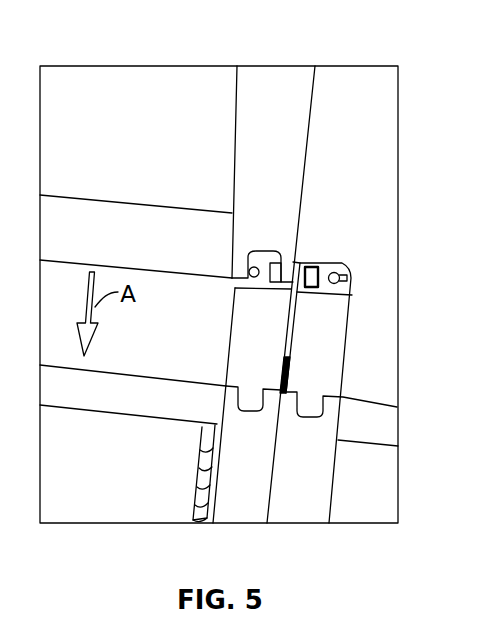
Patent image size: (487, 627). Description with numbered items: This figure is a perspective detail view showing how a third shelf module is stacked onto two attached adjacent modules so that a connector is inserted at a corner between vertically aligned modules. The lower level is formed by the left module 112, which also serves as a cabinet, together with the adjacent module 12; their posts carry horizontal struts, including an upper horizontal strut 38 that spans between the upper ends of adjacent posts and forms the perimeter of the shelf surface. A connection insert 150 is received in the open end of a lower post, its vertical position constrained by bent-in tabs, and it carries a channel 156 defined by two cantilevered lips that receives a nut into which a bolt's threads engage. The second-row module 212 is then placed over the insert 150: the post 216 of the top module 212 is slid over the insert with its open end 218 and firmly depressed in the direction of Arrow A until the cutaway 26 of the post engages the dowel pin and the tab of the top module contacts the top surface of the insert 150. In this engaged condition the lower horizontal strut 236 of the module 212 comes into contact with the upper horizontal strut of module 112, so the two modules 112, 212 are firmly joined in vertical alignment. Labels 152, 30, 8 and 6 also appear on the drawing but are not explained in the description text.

The module 212 is at (147, 98).
The post 216 is at (266, 98).
The open end 218 is at (228, 282).
The connector block 152 is at (311, 264).
The channel 156 is at (338, 272).
The connection insert 150 is at (243, 335).
The cutaway 26 is at (252, 410).
The layer line 30 is at (113, 384).
The upper horizontal strut 38 is at (80, 397).
The lower horizontal strut 236 is at (77, 235).
The left module 112 is at (124, 475).
The module 12 is at (367, 498).
The layer 8 is at (6, 148).
The layer 6 is at (4, 222).